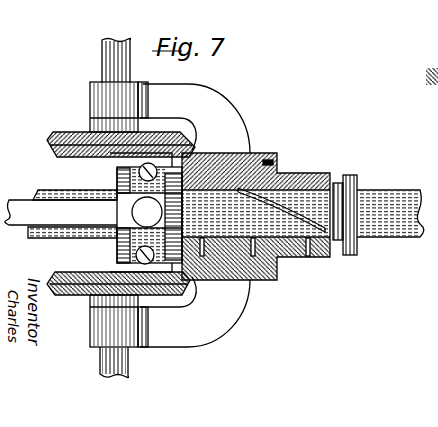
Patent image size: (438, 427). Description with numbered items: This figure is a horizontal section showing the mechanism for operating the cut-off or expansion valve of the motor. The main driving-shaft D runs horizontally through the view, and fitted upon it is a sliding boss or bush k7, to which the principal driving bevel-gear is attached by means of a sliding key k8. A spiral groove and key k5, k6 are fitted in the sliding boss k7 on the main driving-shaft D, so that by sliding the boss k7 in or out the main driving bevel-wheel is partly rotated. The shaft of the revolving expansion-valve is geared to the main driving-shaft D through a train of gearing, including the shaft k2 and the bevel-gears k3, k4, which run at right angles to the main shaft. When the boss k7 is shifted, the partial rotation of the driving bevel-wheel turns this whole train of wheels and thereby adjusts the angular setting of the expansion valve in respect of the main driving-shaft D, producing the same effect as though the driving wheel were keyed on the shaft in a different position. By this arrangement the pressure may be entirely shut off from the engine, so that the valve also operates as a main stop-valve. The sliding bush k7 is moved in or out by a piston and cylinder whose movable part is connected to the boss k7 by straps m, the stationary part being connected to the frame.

The shaft k2 is at (135, 367).
The bevel-gear k3 is at (70, 316).
The bevel-gear k4 is at (190, 300).
The spiral groove k5 is at (292, 207).
The key k6 is at (240, 188).
The sliding boss k7 is at (290, 176).
The sliding key k8 is at (295, 257).
The main driving-shaft D is at (50, 184).
The straps m is at (93, 210).